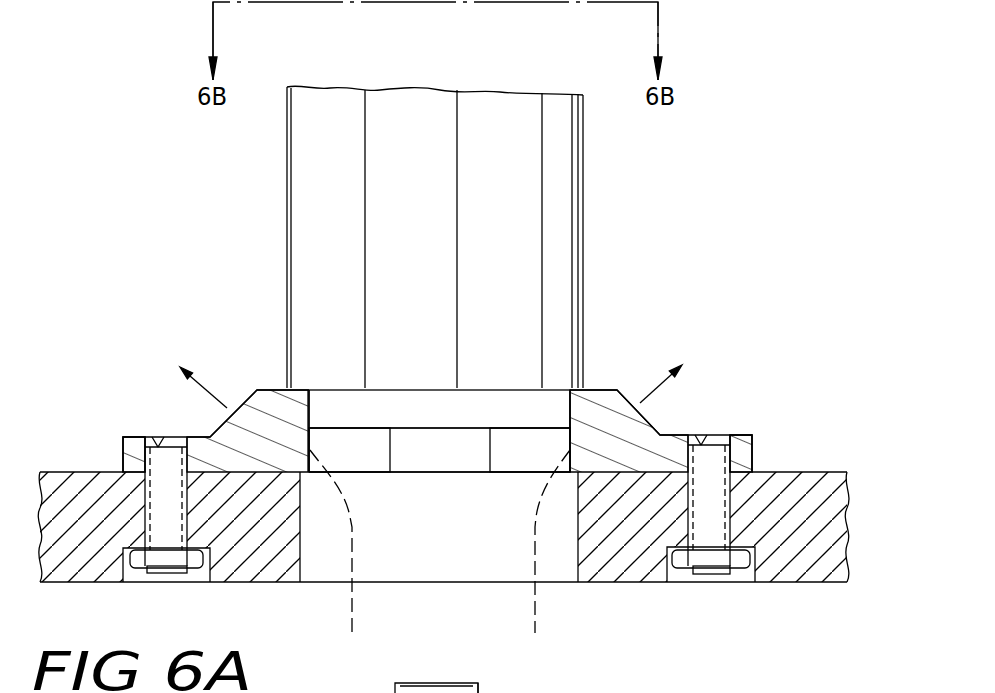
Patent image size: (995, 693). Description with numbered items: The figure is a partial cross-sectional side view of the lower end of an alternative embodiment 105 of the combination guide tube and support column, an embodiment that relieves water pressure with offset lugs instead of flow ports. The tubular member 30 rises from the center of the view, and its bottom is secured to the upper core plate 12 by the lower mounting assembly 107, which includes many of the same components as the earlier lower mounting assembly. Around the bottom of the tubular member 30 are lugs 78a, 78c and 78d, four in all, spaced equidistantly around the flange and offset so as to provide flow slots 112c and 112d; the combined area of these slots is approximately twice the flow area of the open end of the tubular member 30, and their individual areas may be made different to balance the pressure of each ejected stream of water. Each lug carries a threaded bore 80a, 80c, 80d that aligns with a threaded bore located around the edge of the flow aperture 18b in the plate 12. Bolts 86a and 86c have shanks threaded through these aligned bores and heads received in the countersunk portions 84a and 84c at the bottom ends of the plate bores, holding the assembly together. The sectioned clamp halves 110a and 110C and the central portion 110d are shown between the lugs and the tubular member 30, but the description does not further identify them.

The alternative embodiment of the combination guide tube and support column 105 is at (212, 141).
The tubular member 30 is at (585, 208).
The lower mounting assembly 107 is at (257, 360).
The first clamp jaw 110a is at (270, 463).
The second clamp jaw 110C is at (610, 400).
The clamp center block 110d is at (423, 448).
The flow slot 112d is at (367, 459).
The flow slot 112c is at (543, 459).
The upper core plate 12 is at (822, 528).
The flow aperture 18b is at (576, 486).
The lug 78a is at (128, 462).
The lug 78c is at (743, 455).
The threaded bore 80a is at (160, 440).
The threaded bore 80c is at (700, 440).
The countersunk portion 84a is at (203, 570).
The countersunk portion 84c is at (676, 573).
The bolt 86a is at (163, 558).
The bolt 86c is at (710, 560).
The threaded bore 80d is at (437, 666).
The lug 78d is at (482, 692).